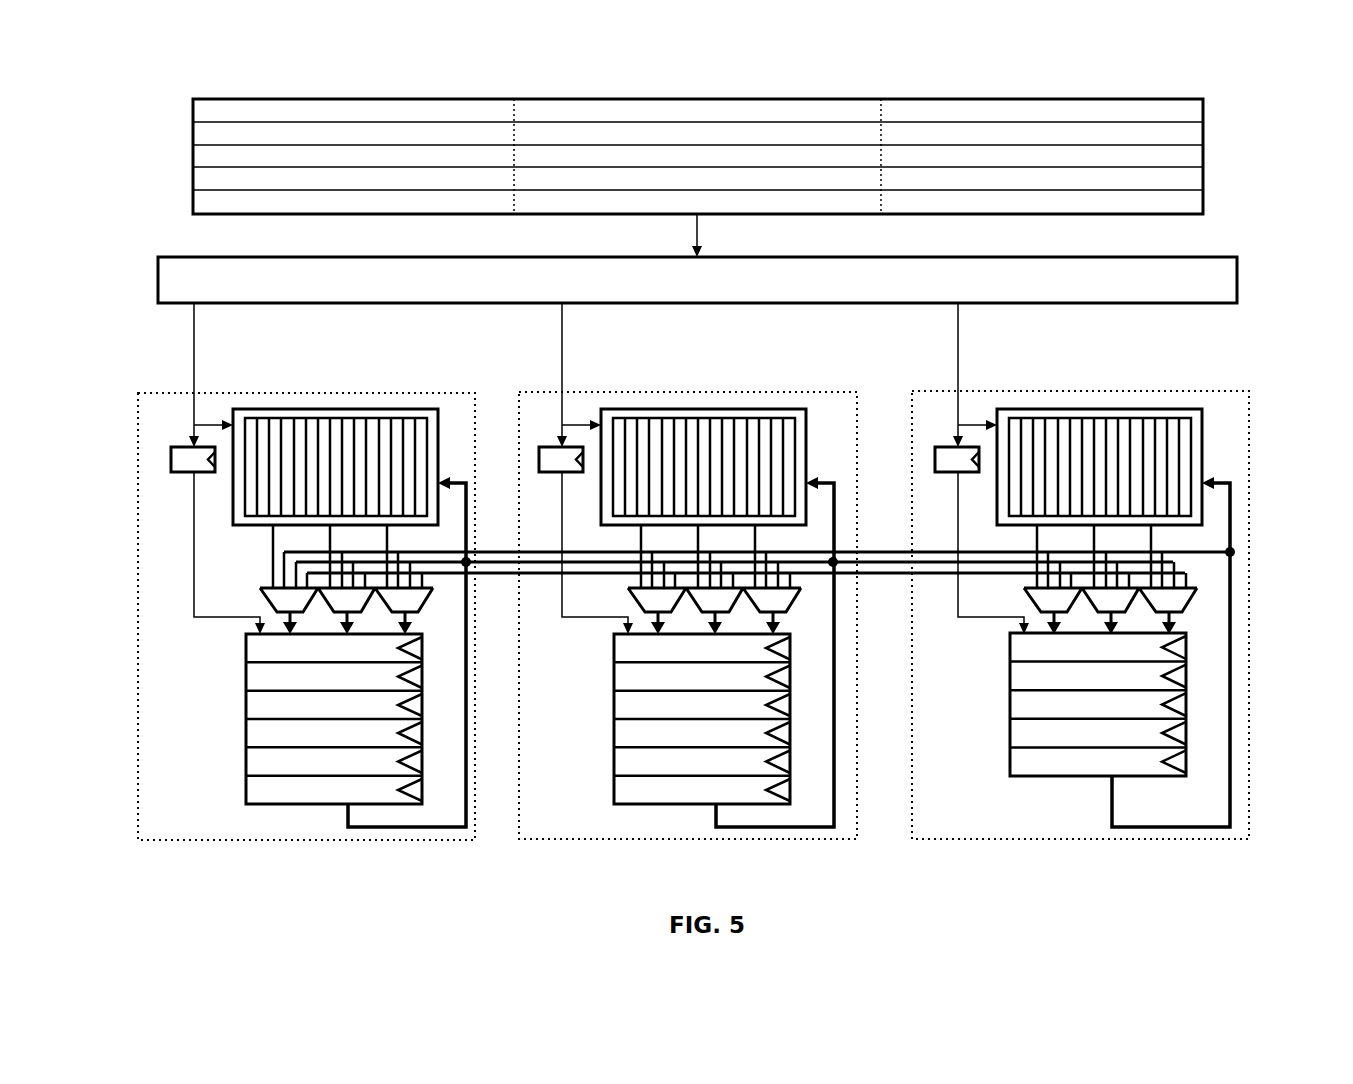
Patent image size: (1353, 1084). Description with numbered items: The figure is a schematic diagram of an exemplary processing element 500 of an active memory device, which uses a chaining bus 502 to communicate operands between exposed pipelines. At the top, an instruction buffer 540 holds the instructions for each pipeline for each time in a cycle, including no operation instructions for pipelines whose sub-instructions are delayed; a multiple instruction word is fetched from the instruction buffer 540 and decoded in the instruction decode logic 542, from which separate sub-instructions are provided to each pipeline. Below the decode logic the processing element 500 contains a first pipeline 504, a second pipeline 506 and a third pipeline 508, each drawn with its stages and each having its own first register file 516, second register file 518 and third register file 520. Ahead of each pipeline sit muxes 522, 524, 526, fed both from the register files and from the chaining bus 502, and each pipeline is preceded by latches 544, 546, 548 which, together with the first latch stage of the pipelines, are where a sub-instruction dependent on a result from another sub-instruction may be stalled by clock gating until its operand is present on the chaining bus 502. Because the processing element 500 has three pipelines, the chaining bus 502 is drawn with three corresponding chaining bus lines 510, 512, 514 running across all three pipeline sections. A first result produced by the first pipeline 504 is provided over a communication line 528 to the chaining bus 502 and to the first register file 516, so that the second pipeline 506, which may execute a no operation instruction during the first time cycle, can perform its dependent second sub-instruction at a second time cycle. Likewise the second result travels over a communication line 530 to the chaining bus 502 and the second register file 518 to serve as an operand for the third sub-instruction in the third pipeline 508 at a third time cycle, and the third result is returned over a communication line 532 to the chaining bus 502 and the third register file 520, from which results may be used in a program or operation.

The processing element 500 is at (716, 482).
The chaining bus 502 is at (759, 586).
The first pipeline 504 is at (267, 805).
The second pipeline 506 is at (708, 762).
The third pipeline 508 is at (1103, 759).
The chaining bus line 510 is at (523, 552).
The chaining bus line 512 is at (875, 563).
The chaining bus line 514 is at (917, 574).
The first register file 516 is at (328, 418).
The second register file 518 is at (703, 461).
The third register file 520 is at (1099, 462).
The mux 522 is at (247, 600).
The mux 524 is at (666, 630).
The mux 526 is at (1175, 610).
The communication line 528 is at (470, 802).
The communication line 530 is at (801, 684).
The communication line 532 is at (1197, 681).
The instruction buffer 540 is at (1212, 146).
The instruction decode logic 542 is at (1242, 292).
The latch 544 is at (178, 443).
The latch 546 is at (553, 468).
The latch 548 is at (949, 468).